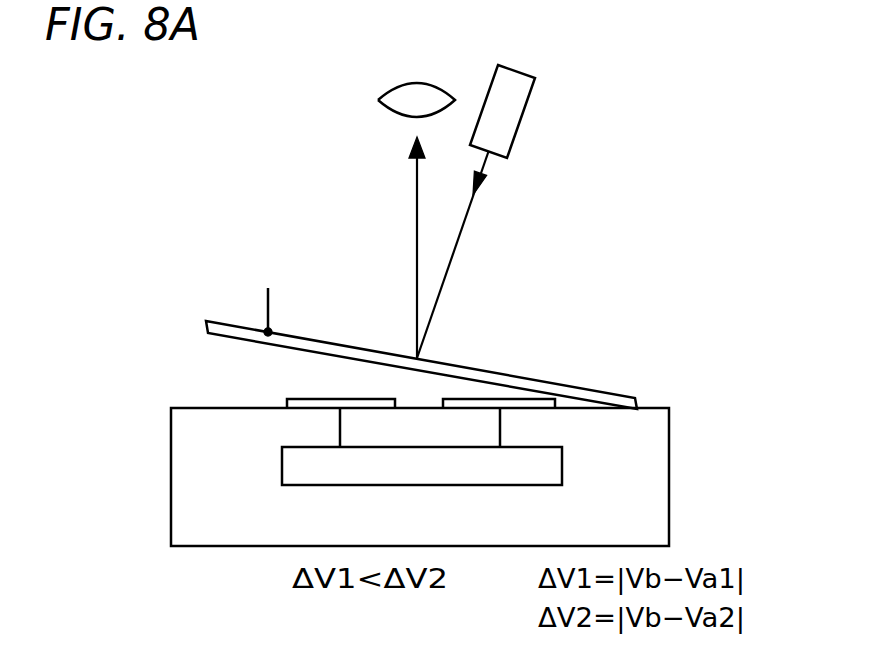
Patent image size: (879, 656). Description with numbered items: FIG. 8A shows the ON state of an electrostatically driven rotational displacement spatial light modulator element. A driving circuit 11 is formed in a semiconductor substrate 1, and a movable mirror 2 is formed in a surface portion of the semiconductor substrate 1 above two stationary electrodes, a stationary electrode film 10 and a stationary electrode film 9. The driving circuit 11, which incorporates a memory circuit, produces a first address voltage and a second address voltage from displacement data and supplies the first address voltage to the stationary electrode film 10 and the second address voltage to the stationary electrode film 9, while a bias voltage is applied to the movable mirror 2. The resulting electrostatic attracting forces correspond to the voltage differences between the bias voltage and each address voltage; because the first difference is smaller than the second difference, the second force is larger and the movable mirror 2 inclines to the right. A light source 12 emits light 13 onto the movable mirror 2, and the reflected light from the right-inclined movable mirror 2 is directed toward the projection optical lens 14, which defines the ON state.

The semiconductor substrate 1 is at (652, 462).
The movable mirror 2 is at (487, 370).
The stationary electrode film 9 is at (513, 400).
The stationary electrode film 10 is at (323, 399).
The driving circuit 11 is at (538, 467).
The light source 12 is at (522, 117).
The light 13 is at (452, 255).
The projection optical lens 14 is at (415, 95).